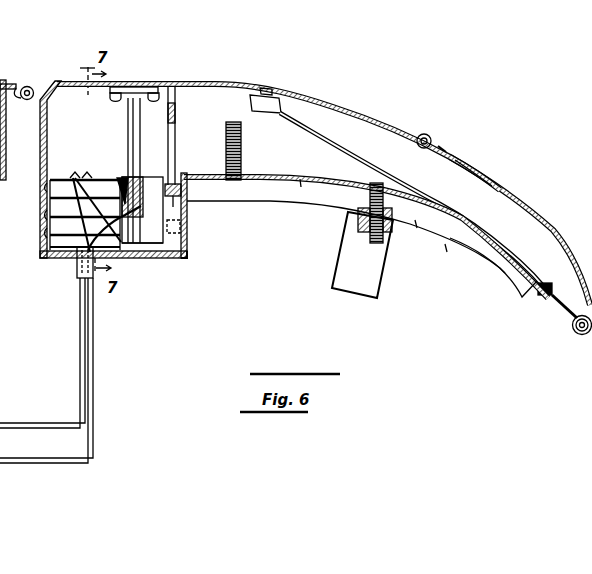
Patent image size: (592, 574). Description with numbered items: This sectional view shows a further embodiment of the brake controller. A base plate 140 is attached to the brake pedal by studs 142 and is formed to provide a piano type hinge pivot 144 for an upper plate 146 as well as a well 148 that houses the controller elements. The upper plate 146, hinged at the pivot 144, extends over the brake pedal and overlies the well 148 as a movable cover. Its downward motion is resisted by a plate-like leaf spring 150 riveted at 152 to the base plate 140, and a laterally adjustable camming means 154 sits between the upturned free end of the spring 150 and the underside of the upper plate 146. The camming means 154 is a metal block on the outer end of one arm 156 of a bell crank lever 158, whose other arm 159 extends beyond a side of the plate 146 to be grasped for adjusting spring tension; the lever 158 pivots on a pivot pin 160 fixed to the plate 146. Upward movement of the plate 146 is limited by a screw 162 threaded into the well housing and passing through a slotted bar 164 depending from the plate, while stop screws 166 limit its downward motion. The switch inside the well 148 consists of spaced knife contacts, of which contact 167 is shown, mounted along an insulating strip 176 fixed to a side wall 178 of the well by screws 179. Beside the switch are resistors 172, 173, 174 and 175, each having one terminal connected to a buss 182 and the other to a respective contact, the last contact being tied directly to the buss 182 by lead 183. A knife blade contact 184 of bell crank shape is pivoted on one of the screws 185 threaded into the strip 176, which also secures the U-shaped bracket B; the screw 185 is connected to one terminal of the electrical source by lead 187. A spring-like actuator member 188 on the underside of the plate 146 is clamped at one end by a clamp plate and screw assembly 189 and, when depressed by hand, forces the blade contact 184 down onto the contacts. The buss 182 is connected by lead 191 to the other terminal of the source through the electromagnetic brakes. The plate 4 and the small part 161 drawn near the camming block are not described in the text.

The plate 4 is at (294, 203).
The base plate 140 is at (475, 227).
The studs 142 is at (366, 245).
The piano type hinge pivot 144 is at (573, 333).
The upper plate 146 is at (482, 172).
The well 148 is at (180, 256).
The leaf spring 150 is at (363, 160).
The rivet 152 is at (540, 295).
The camming means 154 is at (257, 111).
The arm of bell crank lever 156 is at (337, 102).
The bell crank lever 158 is at (474, 186).
The other arm of bell crank lever 159 is at (22, 88).
The pivot pin 160 is at (424, 134).
The mounting piece 161 is at (268, 90).
The screw 162 is at (212, 195).
The slotted bar 164 is at (178, 100).
The stop screws 166 is at (226, 133).
The knife contact 167 is at (140, 167).
The resistor 172 is at (50, 250).
The resistor 173 is at (47, 232).
The resistor 174 is at (47, 215).
The resistor 175 is at (42, 184).
The insulating strip 176 is at (192, 237).
The side wall 178 is at (188, 198).
The screws 179 is at (192, 220).
The buss 182 is at (88, 172).
The lead 183 is at (73, 170).
The knife blade contact 184 is at (128, 124).
The screw 185 is at (175, 247).
The lead 187 is at (96, 256).
The actuator member 188 is at (135, 87).
The clamp plate and screw assembly 189 is at (152, 94).
The lead 191 is at (75, 262).